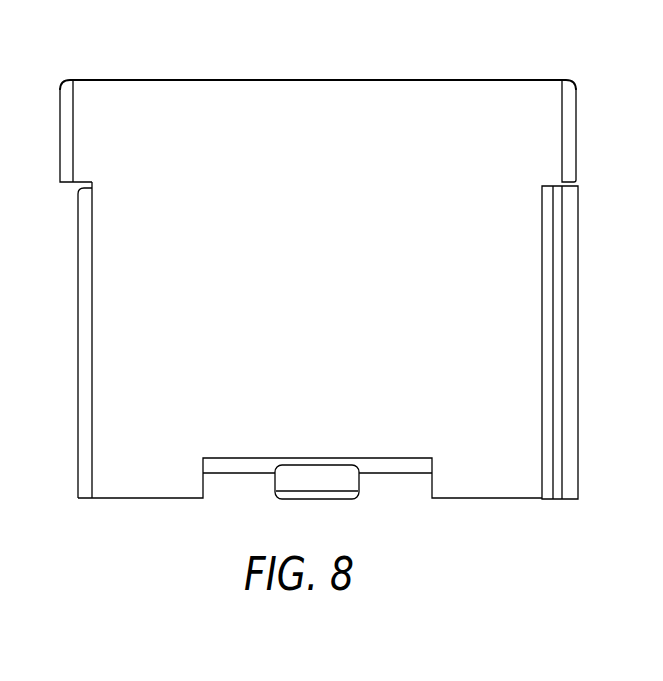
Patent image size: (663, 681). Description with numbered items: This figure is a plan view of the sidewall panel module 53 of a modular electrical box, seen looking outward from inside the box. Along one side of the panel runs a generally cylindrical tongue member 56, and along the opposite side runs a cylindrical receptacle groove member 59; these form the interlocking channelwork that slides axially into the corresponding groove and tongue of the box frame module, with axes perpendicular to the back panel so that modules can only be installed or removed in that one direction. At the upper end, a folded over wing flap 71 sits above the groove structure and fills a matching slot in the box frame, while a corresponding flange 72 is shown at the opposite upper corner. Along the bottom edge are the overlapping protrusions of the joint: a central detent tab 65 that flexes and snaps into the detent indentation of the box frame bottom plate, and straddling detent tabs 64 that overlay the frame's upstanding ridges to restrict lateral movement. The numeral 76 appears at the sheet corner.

The sidewall panel module 53 is at (358, 78).
The folded over wing flap 71 is at (65, 140).
The right flange 72 is at (562, 108).
The tongue member 56 is at (78, 302).
The receptacle groove member 59 is at (549, 178).
The detent tabs 64 is at (253, 461).
The central detent tab 65 is at (314, 500).
The sheet indicator 76 is at (640, 16).